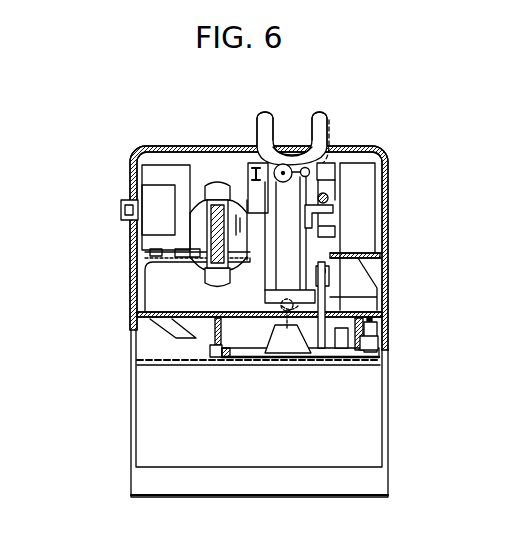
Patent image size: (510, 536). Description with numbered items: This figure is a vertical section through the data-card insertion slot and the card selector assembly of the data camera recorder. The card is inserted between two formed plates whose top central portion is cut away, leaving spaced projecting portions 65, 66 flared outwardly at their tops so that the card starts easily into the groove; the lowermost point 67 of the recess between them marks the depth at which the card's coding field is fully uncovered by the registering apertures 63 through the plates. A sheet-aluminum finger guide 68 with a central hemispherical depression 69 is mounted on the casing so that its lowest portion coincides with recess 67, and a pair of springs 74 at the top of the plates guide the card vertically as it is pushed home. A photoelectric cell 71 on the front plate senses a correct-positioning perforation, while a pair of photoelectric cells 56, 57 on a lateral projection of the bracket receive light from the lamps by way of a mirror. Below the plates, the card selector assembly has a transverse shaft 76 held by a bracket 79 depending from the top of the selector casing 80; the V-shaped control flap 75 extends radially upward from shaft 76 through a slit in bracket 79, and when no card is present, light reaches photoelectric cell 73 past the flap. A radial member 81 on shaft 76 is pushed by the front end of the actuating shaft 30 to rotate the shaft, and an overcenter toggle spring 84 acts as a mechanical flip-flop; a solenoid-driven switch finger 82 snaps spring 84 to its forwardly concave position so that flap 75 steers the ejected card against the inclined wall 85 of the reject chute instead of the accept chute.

The actuating shaft 30 is at (329, 268).
The photoelectric cell 56 is at (334, 170).
The photoelectric cell 57 is at (333, 236).
The aperture 63 is at (285, 265).
The projecting portion 65 is at (265, 117).
The projecting portion 66 is at (320, 117).
The lowermost point of recess 67 is at (291, 154).
The finger guide 68 is at (249, 146).
The hemispherical depression 69 is at (293, 148).
The photoelectric cell 71 is at (284, 182).
The photoelectric cell 73 is at (288, 326).
The spring 74 is at (329, 142).
The control flap 75 is at (282, 358).
The shaft 76 is at (213, 347).
The bracket 79 is at (207, 340).
The selector casing 80 is at (362, 353).
The radial member 81 is at (321, 358).
The switch finger 82 is at (340, 358).
The toggle spring 84 is at (378, 341).
The inclined wall 85 is at (153, 456).